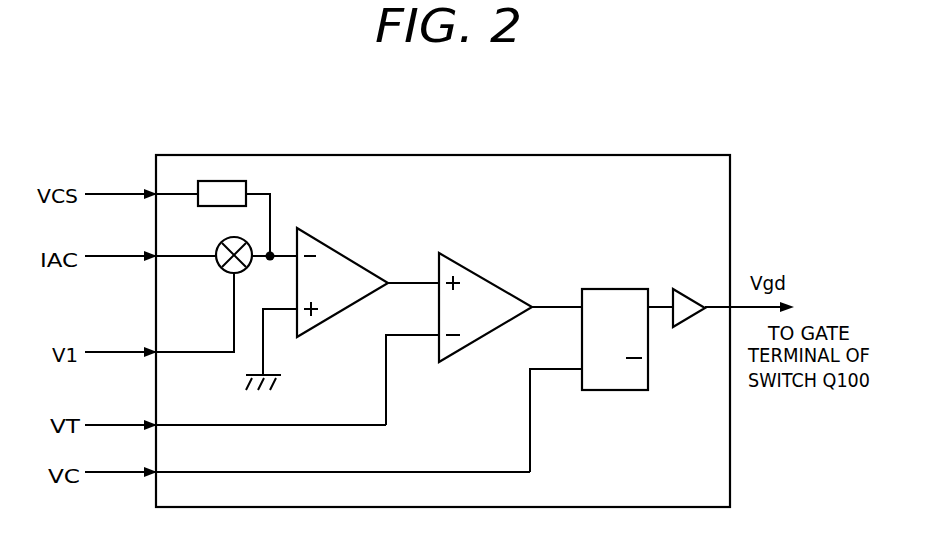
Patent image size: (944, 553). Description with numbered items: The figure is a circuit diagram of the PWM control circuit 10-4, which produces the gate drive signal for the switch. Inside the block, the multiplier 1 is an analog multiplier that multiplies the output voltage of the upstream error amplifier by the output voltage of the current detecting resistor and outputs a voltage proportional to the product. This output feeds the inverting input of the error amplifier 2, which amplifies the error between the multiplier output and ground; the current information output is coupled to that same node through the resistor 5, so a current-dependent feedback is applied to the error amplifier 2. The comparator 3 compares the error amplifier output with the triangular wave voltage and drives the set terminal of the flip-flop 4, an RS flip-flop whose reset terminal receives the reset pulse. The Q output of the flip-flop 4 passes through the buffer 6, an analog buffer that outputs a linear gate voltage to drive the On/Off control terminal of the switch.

The PWM control circuit 10-4 is at (468, 155).
The multiplier 1 is at (225, 270).
The error amplifier 2 is at (350, 262).
The comparator 3 is at (487, 278).
The flip-flop 4 is at (612, 289).
The resistor 5 is at (220, 181).
The buffer 6 is at (688, 295).